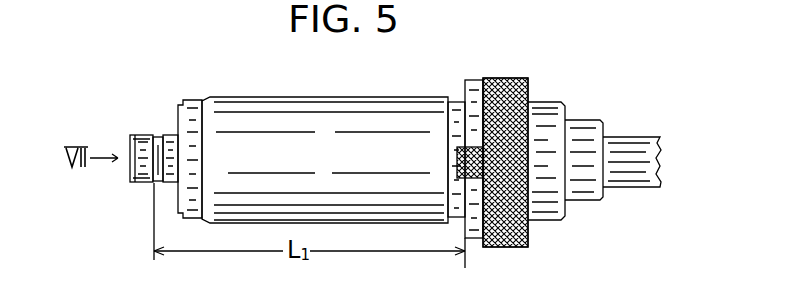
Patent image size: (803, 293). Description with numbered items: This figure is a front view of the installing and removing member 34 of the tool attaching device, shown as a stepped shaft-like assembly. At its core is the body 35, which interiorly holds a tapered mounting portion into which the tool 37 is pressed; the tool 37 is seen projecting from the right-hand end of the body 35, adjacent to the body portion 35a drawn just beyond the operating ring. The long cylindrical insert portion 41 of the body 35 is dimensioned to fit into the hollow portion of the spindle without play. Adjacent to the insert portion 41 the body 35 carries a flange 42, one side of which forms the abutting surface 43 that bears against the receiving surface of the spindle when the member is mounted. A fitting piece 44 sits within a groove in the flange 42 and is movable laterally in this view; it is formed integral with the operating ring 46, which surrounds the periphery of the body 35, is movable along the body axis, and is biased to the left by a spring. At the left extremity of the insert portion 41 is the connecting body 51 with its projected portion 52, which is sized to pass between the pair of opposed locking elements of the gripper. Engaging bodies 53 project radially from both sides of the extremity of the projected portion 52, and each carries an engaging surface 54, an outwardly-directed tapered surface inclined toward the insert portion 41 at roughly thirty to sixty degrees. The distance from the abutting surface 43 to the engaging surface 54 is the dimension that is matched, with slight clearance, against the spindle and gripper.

The installing and removing member 34 is at (333, 128).
The body 35 is at (325, 137).
The shaft portion 35a is at (545, 118).
The tool 37 is at (637, 140).
The insert portion 41 is at (257, 113).
The flange 42 is at (490, 246).
The abutting surface 43 is at (454, 222).
The fitting piece 44 is at (503, 78).
The operating ring 46 is at (530, 228).
The connecting body 51 is at (132, 134).
The projected portion 52 is at (165, 134).
The engaging body 53 is at (143, 163).
The engaging surface 54 is at (158, 165).